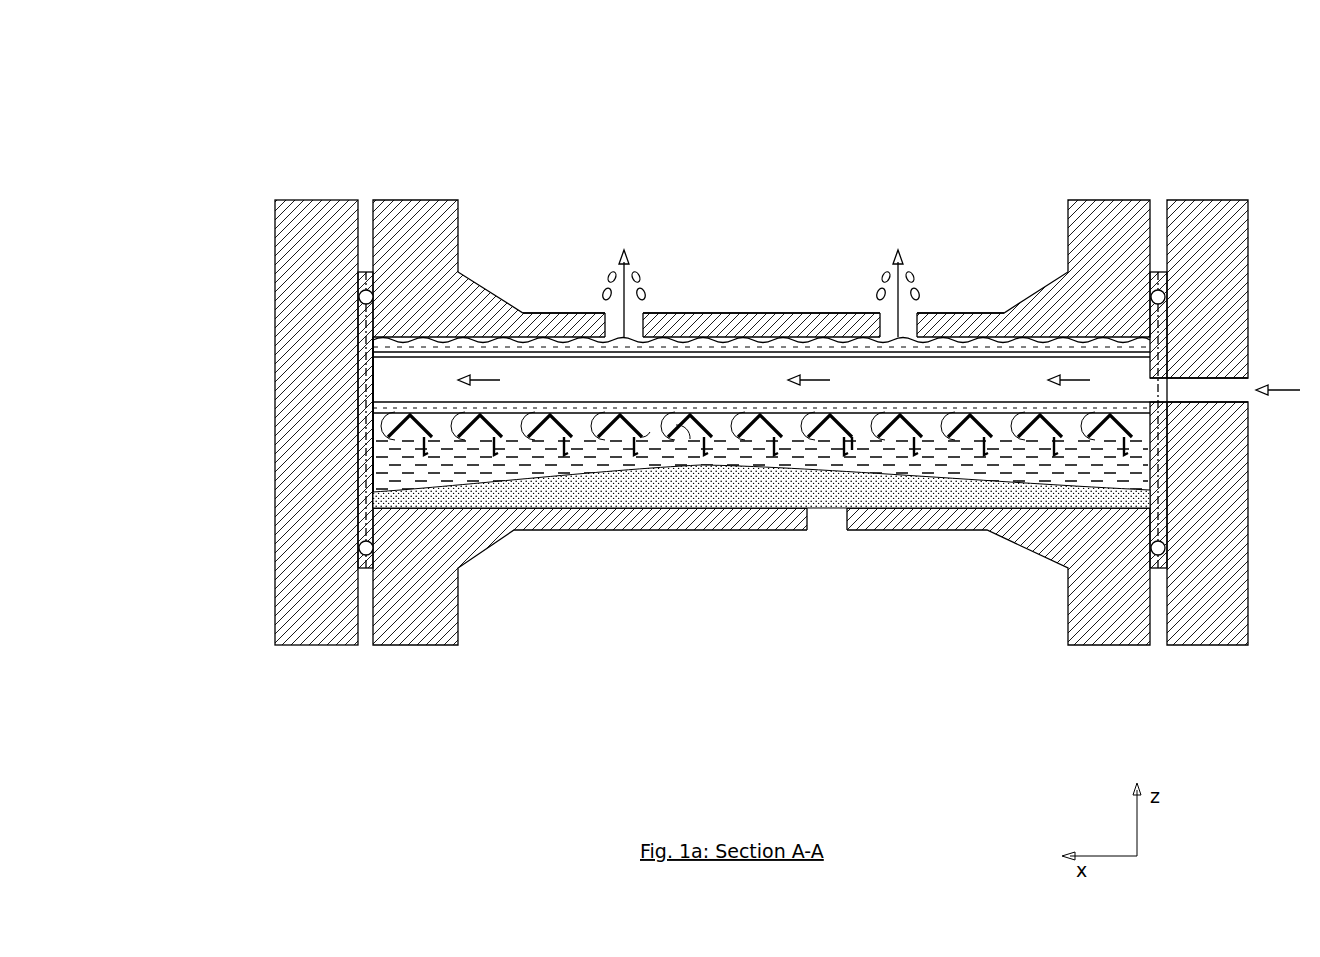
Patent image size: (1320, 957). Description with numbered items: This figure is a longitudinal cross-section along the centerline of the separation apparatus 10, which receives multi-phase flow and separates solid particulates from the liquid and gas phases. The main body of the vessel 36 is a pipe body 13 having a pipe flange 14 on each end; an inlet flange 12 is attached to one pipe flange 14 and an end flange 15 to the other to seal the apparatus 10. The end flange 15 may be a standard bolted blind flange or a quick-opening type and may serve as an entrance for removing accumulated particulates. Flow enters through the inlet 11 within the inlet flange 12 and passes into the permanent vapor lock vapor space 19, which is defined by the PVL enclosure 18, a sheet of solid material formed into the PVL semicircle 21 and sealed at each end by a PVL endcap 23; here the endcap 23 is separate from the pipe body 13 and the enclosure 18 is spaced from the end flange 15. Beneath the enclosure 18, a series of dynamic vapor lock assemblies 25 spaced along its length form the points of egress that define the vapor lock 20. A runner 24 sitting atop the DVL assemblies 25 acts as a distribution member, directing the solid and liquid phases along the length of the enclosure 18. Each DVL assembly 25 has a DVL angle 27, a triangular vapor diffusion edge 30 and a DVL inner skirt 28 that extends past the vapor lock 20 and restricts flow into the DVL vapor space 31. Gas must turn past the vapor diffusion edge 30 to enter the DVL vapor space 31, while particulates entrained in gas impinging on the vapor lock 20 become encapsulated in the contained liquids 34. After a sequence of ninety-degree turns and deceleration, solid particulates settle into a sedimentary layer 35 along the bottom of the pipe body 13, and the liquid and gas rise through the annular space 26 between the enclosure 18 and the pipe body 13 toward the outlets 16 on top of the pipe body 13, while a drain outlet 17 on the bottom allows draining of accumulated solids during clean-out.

The separation apparatus 10 is at (380, 152).
The inlet 11 is at (1205, 378).
The inlet flange 12 is at (1185, 648).
The pipe body 13 is at (360, 558).
The pipe flange 14 is at (415, 648).
The end flange 15 is at (310, 648).
The outlets 16 is at (646, 313).
The drain outlet 17 is at (842, 533).
The PVL enclosure 18 is at (407, 345).
The PVL vapor space 19 is at (726, 380).
The vapor lock 20 is at (650, 432).
The PVL semicircle 21 is at (370, 342).
The PVL endcap 23 is at (358, 390).
The runner 24 is at (596, 410).
The dynamic vapor lock assembly 25 is at (840, 455).
The annular space 26 is at (522, 338).
The DVL angle 27 is at (767, 435).
The DVL inner skirt 28 is at (773, 463).
The vapor diffusion edge 30 is at (673, 440).
The DVL vapor space 31 is at (690, 433).
The contained liquids 34 is at (372, 462).
The sedimentary layer 35 is at (372, 505).
The vessel 36 is at (932, 533).